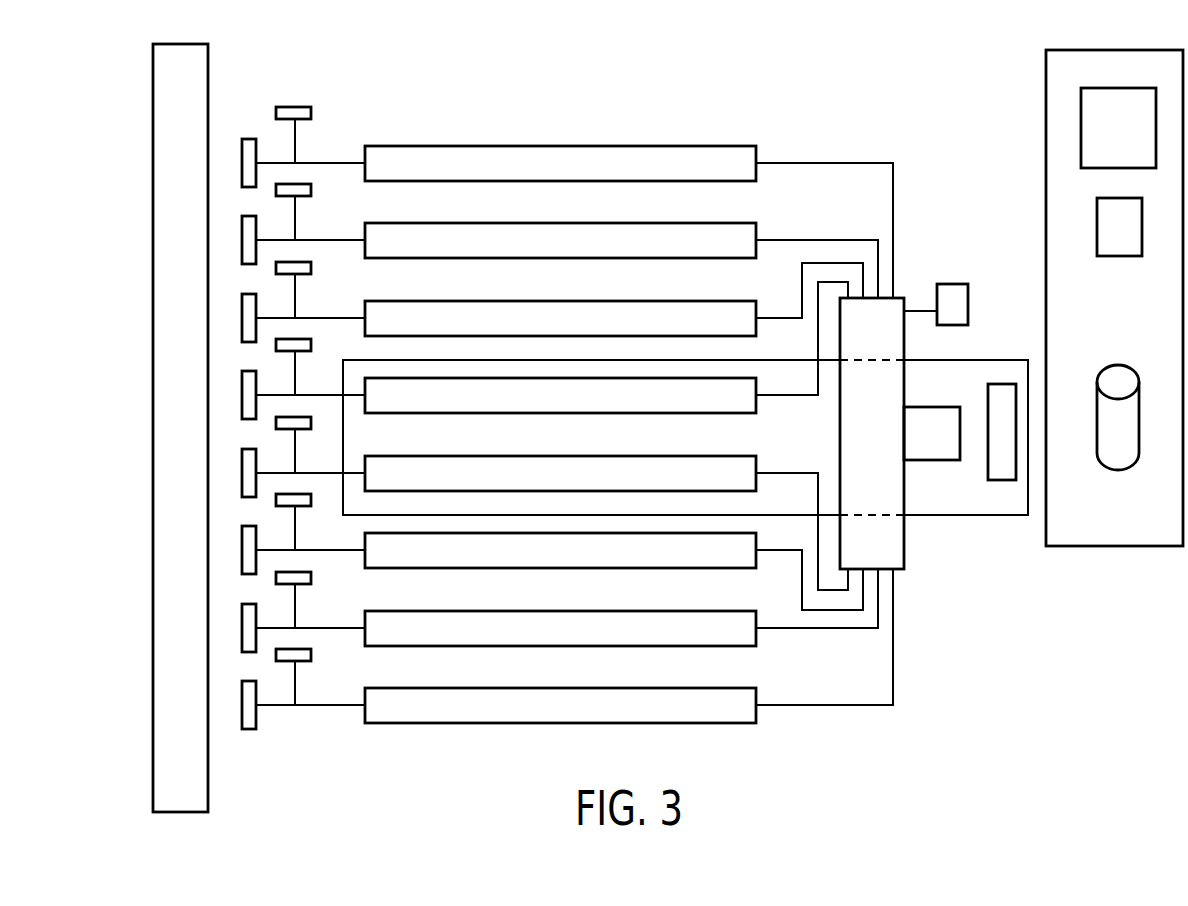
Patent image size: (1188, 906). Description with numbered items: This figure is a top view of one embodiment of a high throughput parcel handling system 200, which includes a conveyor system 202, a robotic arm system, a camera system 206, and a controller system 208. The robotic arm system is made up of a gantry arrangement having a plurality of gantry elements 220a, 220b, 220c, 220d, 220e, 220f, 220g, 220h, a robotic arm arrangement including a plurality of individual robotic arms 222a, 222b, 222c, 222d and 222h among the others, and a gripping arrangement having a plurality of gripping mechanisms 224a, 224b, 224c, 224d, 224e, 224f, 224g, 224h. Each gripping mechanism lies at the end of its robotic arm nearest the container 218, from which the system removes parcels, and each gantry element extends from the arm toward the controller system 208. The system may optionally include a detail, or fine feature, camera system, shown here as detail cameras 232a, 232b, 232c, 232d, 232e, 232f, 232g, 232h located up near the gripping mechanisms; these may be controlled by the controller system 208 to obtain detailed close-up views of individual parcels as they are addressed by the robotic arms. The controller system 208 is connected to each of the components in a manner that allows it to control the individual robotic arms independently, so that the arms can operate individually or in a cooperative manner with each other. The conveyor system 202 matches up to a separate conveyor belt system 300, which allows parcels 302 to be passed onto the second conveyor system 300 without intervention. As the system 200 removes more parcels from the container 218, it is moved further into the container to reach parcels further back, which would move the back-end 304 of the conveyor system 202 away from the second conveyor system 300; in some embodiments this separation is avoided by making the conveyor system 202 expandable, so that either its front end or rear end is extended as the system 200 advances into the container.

The parcel handling system 200 is at (398, 748).
The container 218 is at (208, 68).
The gripping mechanism 224a is at (249, 139).
The gripping mechanism 224b is at (249, 240).
The gripping mechanism 224c is at (249, 318).
The gripping mechanism 224d is at (249, 395).
The gripping mechanism 224e is at (249, 473).
The gripping mechanism 224f is at (249, 550).
The gripping mechanism 224g is at (249, 628).
The gripping mechanism 224h is at (248, 729).
The robotic arm 222a is at (333, 160).
The robotic arm 222b is at (333, 237).
The robotic arm 222c is at (333, 315).
The robotic arm 222d is at (325, 392).
The robotic arm 222h is at (333, 702).
The detail camera system 232a is at (293, 107).
The detail camera system 232b is at (293, 212).
The detail camera system 232c is at (293, 290).
The detail camera system 232d is at (293, 367).
The detail camera system 232e is at (293, 445).
The detail camera system 232f is at (293, 522).
The detail camera system 232g is at (293, 600).
The detail camera system 232h is at (306, 650).
The gantry element 220a is at (559, 146).
The gantry element 220b is at (621, 260).
The gantry element 220c is at (614, 299).
The gantry element 220d is at (606, 347).
The gantry element 220e is at (606, 523).
The gantry element 220f is at (614, 571).
The gantry element 220g is at (621, 607).
The gantry element 220h is at (516, 724).
The conveyor system 202 is at (1007, 517).
The back-end of conveyor system 304 is at (967, 505).
The controller system 208 is at (898, 553).
The camera system 206 is at (948, 283).
The second conveyor belt system 300 is at (1117, 548).
The parcels 302 is at (948, 405).